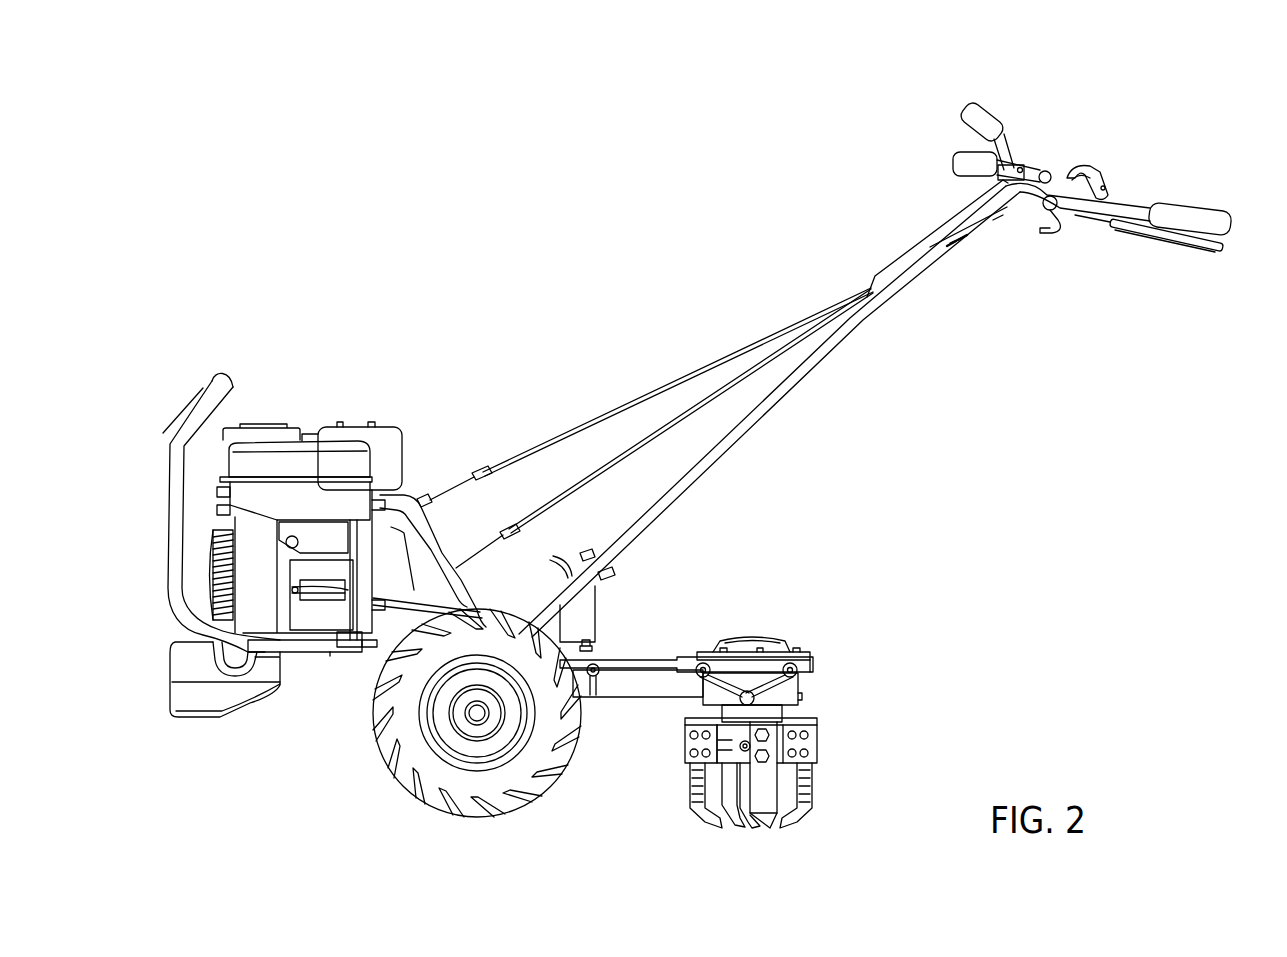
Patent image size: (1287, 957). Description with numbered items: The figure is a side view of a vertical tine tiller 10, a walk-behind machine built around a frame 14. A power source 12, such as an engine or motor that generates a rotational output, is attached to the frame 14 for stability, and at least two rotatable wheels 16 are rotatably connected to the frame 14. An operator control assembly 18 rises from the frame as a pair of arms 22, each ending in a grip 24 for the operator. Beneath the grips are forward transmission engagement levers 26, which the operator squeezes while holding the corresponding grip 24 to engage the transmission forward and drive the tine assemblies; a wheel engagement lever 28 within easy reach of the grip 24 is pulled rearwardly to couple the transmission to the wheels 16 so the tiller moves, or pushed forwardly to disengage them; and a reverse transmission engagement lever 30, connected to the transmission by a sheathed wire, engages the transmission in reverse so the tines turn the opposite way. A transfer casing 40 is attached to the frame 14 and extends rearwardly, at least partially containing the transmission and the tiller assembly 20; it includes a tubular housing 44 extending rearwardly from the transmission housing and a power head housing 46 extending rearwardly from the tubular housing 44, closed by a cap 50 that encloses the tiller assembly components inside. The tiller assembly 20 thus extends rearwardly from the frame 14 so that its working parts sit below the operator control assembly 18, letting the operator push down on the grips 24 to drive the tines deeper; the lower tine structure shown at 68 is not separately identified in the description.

The vertical tine tiller 10 is at (403, 298).
The power source 12 is at (256, 560).
The frame 14 is at (305, 653).
The rotatable wheels 16 is at (420, 789).
The operator control assembly 18 is at (848, 348).
The tiller assembly 20 is at (817, 656).
The arms 22 is at (720, 447).
The grip 24 is at (1190, 218).
The forward transmission engagement levers 26 is at (1158, 243).
The wheel engagement lever 28 is at (952, 167).
The reverse transmission engagement lever 30 is at (986, 121).
The transfer casing 40 is at (622, 699).
The tubular housing 44 is at (652, 659).
The power head housing 46 is at (787, 690).
The cap 50 is at (768, 637).
The tine assembly 68 is at (833, 775).